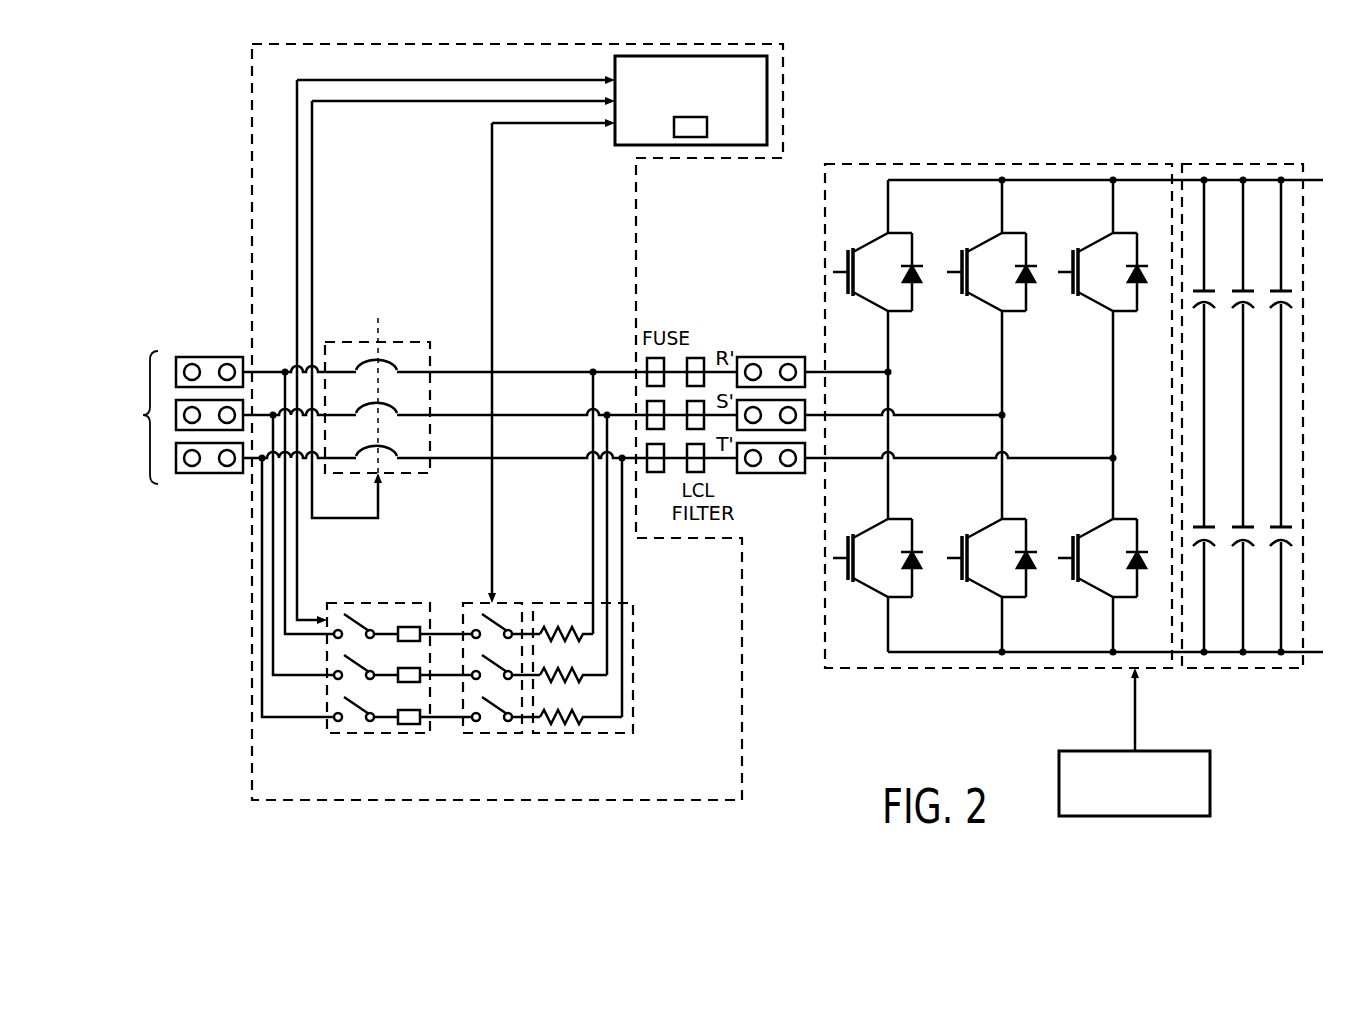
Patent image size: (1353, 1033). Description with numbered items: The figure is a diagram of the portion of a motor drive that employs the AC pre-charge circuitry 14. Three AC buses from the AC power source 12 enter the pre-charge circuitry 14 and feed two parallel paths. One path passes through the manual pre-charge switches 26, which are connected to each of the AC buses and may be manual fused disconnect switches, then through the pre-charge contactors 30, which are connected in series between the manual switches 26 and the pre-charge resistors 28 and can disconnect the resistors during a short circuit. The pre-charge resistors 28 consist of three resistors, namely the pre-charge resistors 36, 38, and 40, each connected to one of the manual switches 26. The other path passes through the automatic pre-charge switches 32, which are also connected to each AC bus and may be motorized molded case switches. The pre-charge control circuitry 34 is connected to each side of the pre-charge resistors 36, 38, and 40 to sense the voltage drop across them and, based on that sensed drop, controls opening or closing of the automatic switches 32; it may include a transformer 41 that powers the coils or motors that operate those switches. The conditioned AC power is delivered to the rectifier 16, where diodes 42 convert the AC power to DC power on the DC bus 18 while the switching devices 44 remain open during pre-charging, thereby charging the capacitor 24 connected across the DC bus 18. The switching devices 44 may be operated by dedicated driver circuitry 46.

The AC power source 12 is at (177, 417).
The AC pre-charge circuitry 14 is at (743, 667).
The rectifier 16 is at (997, 164).
The DC bus 18 is at (1175, 653).
The capacitor 24 is at (1245, 669).
The manual pre-charge switches 26 is at (378, 603).
The pre-charge resistors 28 is at (603, 674).
The pre-charge contactors 30 is at (508, 603).
The automatic pre-charge switches 32 is at (409, 342).
The pre-charge control circuitry 34 is at (723, 126).
The pre-charge resistor 36 is at (583, 634).
The pre-charge resistor 38 is at (583, 675).
The pre-charge resistor 40 is at (583, 717).
The transformer 41 is at (707, 127).
The diodes 42 is at (1152, 601).
The switching devices 44 is at (1078, 546).
The driver circuitry 46 is at (1210, 782).